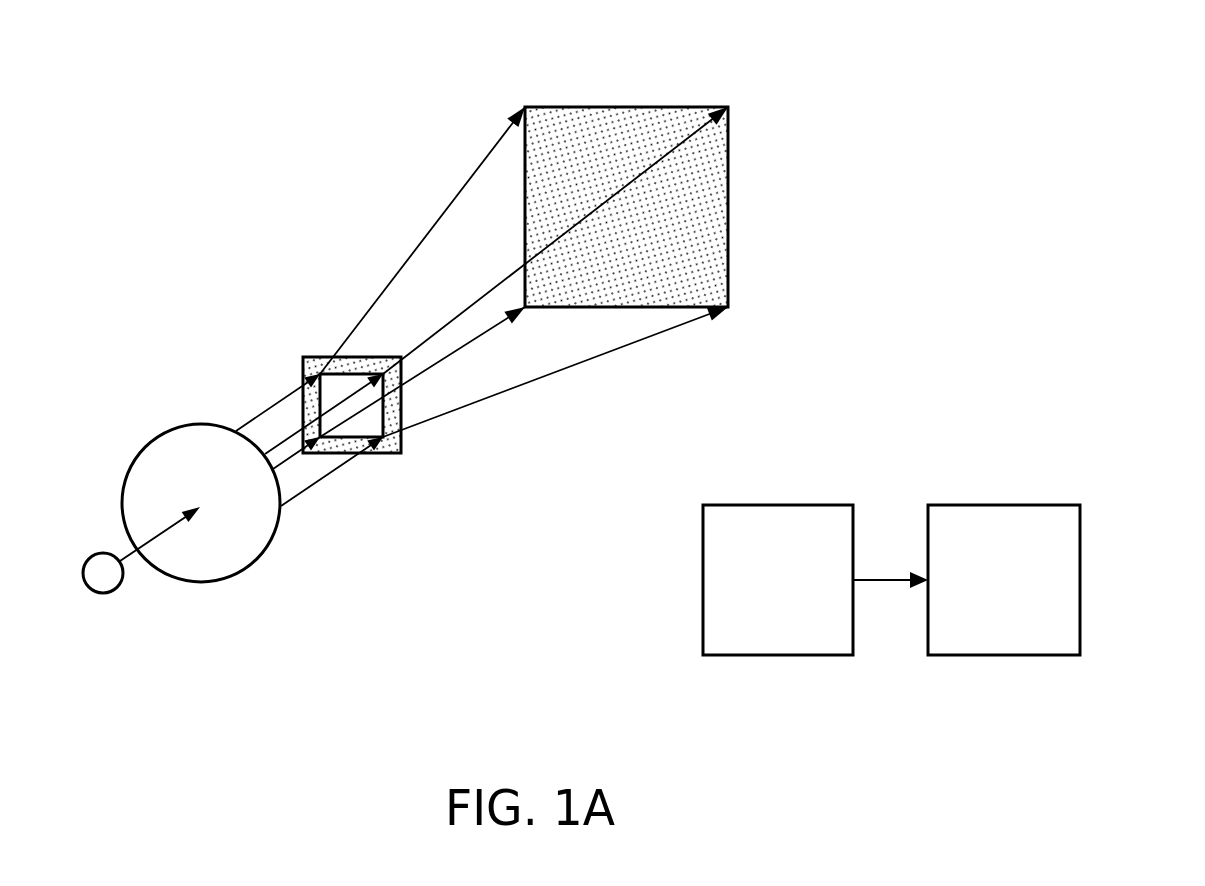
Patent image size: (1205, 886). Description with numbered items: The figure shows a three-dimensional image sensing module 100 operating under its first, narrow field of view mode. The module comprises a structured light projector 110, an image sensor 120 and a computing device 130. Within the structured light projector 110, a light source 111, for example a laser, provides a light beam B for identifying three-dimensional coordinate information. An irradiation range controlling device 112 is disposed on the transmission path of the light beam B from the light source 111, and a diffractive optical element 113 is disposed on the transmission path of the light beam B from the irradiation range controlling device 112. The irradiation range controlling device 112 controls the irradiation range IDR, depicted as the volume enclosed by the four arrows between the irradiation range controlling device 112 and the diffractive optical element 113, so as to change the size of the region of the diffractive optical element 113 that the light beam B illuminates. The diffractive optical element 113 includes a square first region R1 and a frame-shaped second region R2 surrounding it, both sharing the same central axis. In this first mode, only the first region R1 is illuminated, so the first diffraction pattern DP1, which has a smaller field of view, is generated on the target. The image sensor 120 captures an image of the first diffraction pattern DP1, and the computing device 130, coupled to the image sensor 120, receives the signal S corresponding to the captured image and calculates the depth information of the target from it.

The three-dimensional image sensing module 100 is at (617, 375).
The structured light projector 110 is at (297, 512).
The light source 111 is at (165, 573).
The light beam B is at (141, 596).
The irradiation range controlling device 112 is at (244, 580).
The diffractive optical element 113 is at (417, 476).
The first region R1 is at (368, 415).
The second region R2 is at (393, 398).
The irradiation range IDR is at (282, 422).
The first diffraction pattern DP1 is at (615, 106).
The image sensor 120 is at (778, 640).
The computing device 130 is at (1002, 640).
The signal S is at (885, 583).